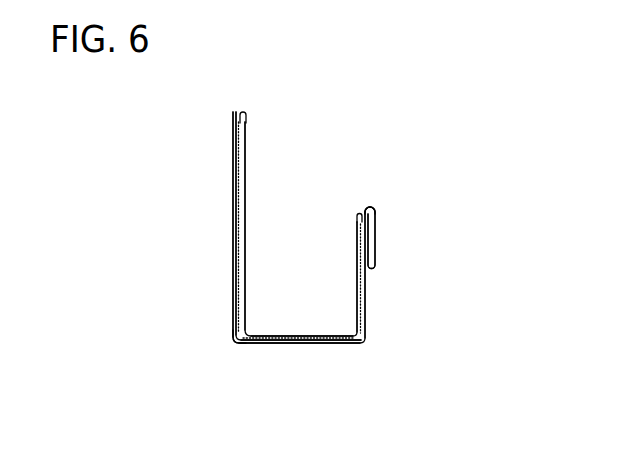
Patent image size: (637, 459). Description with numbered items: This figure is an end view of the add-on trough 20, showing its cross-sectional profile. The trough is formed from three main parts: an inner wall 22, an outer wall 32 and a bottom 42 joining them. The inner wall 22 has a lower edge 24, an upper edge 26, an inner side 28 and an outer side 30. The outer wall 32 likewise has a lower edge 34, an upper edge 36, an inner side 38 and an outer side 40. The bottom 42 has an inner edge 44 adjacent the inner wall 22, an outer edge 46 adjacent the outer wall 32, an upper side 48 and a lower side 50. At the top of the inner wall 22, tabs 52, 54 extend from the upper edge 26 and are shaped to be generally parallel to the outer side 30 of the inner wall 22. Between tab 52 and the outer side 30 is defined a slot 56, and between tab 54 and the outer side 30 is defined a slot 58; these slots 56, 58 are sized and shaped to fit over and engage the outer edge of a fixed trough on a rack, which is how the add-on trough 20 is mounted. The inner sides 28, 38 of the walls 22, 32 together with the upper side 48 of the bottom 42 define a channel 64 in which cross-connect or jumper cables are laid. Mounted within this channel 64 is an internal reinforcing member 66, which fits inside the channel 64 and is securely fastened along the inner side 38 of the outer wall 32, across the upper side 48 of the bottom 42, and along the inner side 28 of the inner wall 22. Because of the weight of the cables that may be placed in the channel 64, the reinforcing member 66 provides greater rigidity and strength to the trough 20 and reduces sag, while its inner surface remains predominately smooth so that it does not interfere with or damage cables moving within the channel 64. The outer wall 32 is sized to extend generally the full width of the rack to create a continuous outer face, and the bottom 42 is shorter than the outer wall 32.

The add-on trough 20 is at (183, 172).
The inner wall 22 is at (399, 286).
The lower edge 24 is at (338, 362).
The upper edge 26 is at (364, 207).
The inner side 28 is at (361, 279).
The outer side 30 is at (399, 276).
The outer wall 32 is at (165, 224).
The lower edge 34 is at (213, 359).
The upper edge 36 is at (238, 93).
The inner side 38 is at (237, 288).
The outer side 40 is at (232, 237).
The bottom 42 is at (306, 362).
The inner edge 44 is at (306, 362).
The outer edge 46 is at (232, 344).
The upper side 48 is at (308, 343).
The lower side 50 is at (300, 347).
The tab 52 is at (428, 256).
The tab 54 is at (428, 256).
The slot 56 is at (408, 260).
The slot 58 is at (375, 270).
The channel 64 is at (289, 247).
The internal reinforcing member 66 is at (245, 111).